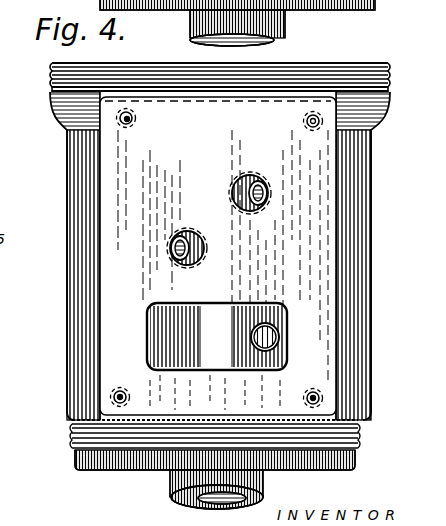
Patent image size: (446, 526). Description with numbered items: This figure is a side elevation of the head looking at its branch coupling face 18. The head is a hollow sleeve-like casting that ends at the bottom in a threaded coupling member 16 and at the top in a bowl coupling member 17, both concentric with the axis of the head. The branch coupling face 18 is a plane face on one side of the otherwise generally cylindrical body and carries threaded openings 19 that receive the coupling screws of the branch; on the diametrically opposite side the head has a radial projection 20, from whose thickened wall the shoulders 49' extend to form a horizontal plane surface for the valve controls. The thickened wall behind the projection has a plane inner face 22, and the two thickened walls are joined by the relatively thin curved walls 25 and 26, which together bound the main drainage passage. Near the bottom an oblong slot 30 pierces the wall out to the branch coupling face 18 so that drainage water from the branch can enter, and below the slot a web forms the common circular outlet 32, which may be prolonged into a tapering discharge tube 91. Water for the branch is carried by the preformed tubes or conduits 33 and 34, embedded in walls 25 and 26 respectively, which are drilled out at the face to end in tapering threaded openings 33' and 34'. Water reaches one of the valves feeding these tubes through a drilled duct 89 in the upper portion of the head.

The threaded coupling member 16 is at (327, 10).
The bowl coupling member 17 is at (332, 78).
The branch coupling face 18 is at (328, 174).
The threaded openings 19 is at (133, 121).
The radial projection 20 is at (6, 286).
The inner face 22 is at (217, 336).
The curved wall 25 is at (369, 262).
The curved wall 26 is at (67, 250).
The oblong slot 30 is at (193, 369).
The common circular outlet 32 is at (221, 41).
The conduit 33 is at (228, 193).
The tapering threaded opening 33' is at (234, 186).
The conduit 34 is at (117, 238).
The tapering threaded opening 34' is at (185, 262).
The shoulders 49' is at (10, 134).
The duct 89 is at (0, 196).
The tapering discharge tube 91 is at (292, 34).